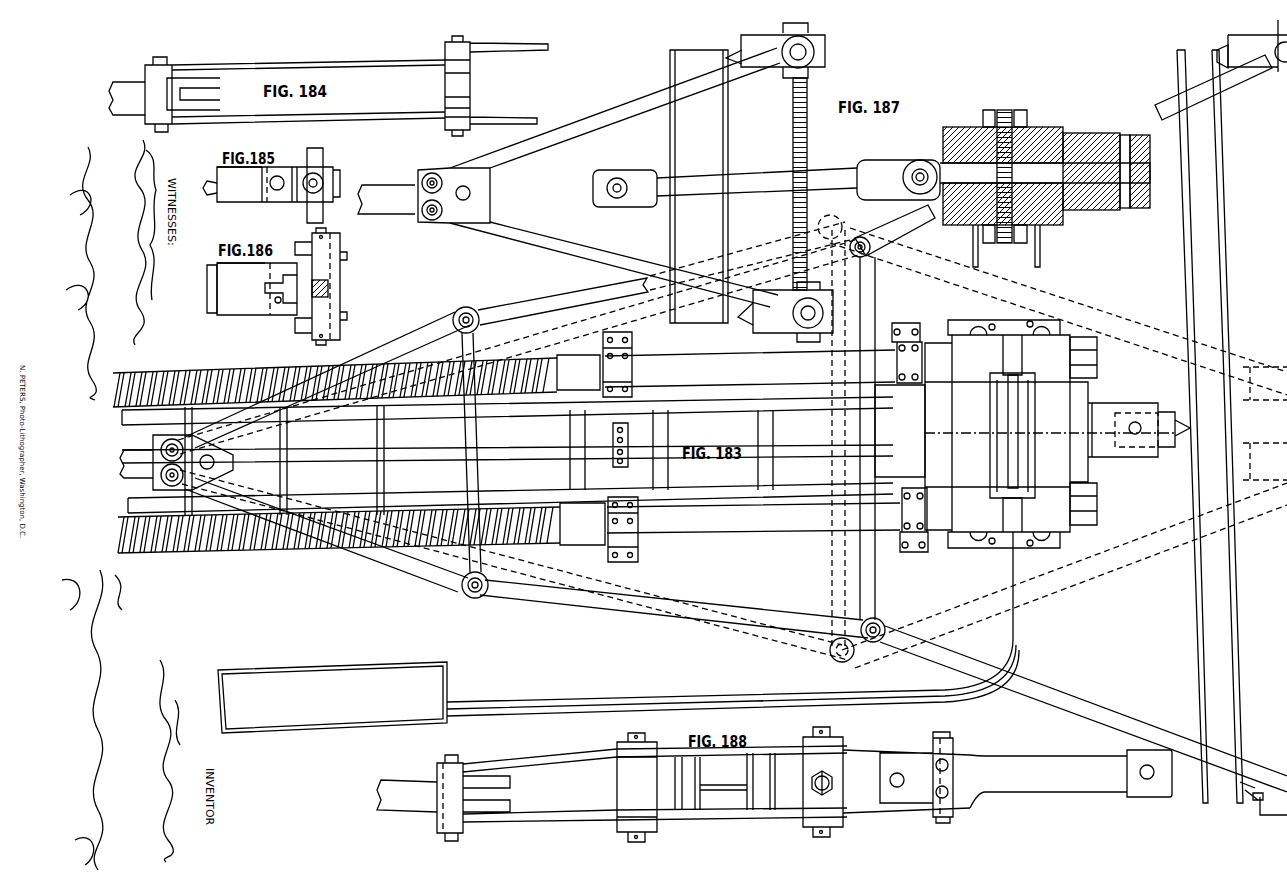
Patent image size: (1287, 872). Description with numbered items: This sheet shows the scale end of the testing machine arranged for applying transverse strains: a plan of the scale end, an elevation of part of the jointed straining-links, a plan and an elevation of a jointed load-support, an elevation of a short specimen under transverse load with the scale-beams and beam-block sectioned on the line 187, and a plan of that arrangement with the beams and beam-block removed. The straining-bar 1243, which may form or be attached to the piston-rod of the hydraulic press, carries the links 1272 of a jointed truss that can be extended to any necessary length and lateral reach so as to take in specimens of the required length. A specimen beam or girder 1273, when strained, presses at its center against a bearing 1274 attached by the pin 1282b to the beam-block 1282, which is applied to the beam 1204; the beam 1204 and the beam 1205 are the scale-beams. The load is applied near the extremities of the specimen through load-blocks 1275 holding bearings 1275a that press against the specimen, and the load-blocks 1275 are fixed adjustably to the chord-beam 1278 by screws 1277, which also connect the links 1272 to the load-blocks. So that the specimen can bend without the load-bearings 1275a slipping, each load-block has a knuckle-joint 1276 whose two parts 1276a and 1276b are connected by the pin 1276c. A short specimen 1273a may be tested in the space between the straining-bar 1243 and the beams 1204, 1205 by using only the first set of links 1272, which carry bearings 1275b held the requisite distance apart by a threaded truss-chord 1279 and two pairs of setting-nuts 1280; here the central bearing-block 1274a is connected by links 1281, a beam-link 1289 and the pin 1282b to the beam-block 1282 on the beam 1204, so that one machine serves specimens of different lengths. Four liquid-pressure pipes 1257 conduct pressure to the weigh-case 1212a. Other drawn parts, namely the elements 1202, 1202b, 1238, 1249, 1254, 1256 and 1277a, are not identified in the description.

In FIG. 183, the section line 187 is at (994, 437).
In FIG. 183, the rack 1202 is at (336, 461).
In FIG. 183, the rack rod 1202b is at (728, 447).
In FIG. 187, the beam 1204 is at (1075, 162).
In FIG. 183, the beam 1204 is at (1043, 431).
In FIG. 187, the beam 1205 is at (1003, 171).
In FIG. 183, the beam 1205 is at (997, 434).
In FIG. 183, the weigh-case 1212a is at (332, 697).
In FIG. 187, the pin 1238 is at (1022, 246).
In FIG. 184, the straining-bar 1243 is at (127, 98).
In FIG. 187, the straining-bar 1243 is at (386, 199).
In FIG. 183, the straining-bar 1243 is at (136, 464).
In FIG. 188, the straining-bar 1243 is at (407, 796).
In FIG. 183, the frame bar 1249 is at (507, 454).
In FIG. 183, the middle bar 1254 is at (507, 445).
In FIG. 187, the threaded post 1256 is at (1011, 176).
In FIG. 183, the liquid-pressure pipe 1257 is at (733, 624).
In FIG. 184, the links 1272 is at (346, 86).
In FIG. 187, the links 1272 is at (845, 177).
In FIG. 183, the links 1272 is at (720, 524).
In FIG. 188, the links 1272 is at (642, 790).
In FIG. 187, the specimen beam or girder 1273 is at (1203, 200).
In FIG. 183, the specimen beam or girder 1273 is at (1215, 576).
In FIG. 187, the short specimen 1273a is at (699, 186).
In FIG. 188, the short specimen 1273a is at (711, 783).
In FIG. 183, the bearing 1274 is at (1174, 424).
In FIG. 187, the central bearing-block 1274a is at (625, 183).
In FIG. 188, the central bearing-block 1274a is at (637, 787).
In FIG. 187, the load-block 1275 is at (1257, 46).
In FIG. 183, the load-block 1275 is at (1253, 593).
In FIG. 188, the load-block 1275 is at (839, 779).
In FIG. 185, the bearing 1275a is at (203, 191).
In FIG. 186, the bearing 1275a is at (206, 289).
In FIG. 187, the bearing 1275a is at (977, 188).
In FIG. 188, the bearing 1275a is at (758, 781).
In FIG. 187, the bearing 1275b is at (800, 183).
In FIG. 185, the knuckle-joint 1276 is at (275, 193).
In FIG. 186, the knuckle-joint 1276 is at (257, 296).
In FIG. 185, the knuckle-joint part 1276a is at (352, 181).
In FIG. 186, the knuckle-joint part 1276a is at (287, 289).
In FIG. 185, the knuckle-joint part 1276b is at (240, 178).
In FIG. 186, the knuckle-joint part 1276b is at (241, 276).
In FIG. 185, the pin 1276c is at (274, 186).
In FIG. 186, the pin 1276c is at (276, 306).
In FIG. 185, the screw 1277 is at (314, 183).
In FIG. 186, the screw 1277 is at (325, 286).
In FIG. 187, the screw 1277 is at (805, 182).
In FIG. 183, the screw 1277 is at (1247, 789).
In FIG. 188, the screw 1277 is at (826, 783).
In FIG. 188, the tab 1277a is at (837, 777).
In FIG. 185, the chord-beam 1278 is at (331, 182).
In FIG. 186, the chord-beam 1278 is at (335, 288).
In FIG. 187, the threaded truss-chord 1279 is at (815, 184).
In FIG. 187, the setting-nut 1280 is at (816, 182).
In FIG. 188, the setting-nut 1280 is at (817, 787).
In FIG. 187, the link 1281 is at (798, 180).
In FIG. 188, the link 1281 is at (906, 777).
In FIG. 187, the beam-block 1282 is at (1100, 165).
In FIG. 183, the beam-block 1282 is at (1123, 424).
In FIG. 187, the pin 1282b is at (1130, 164).
In FIG. 183, the pin 1282b is at (1136, 430).
In FIG. 187, the beam-link 1289 is at (1045, 173).
In FIG. 188, the beam-link 1289 is at (1071, 779).